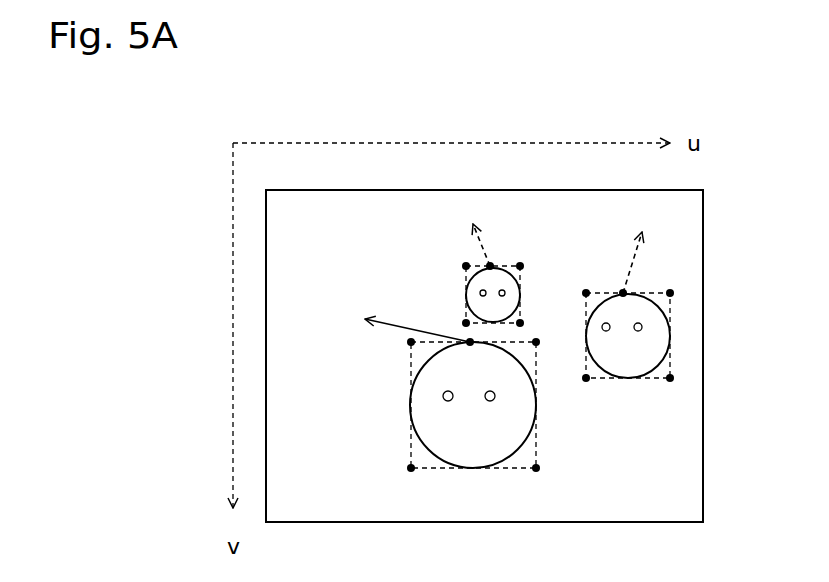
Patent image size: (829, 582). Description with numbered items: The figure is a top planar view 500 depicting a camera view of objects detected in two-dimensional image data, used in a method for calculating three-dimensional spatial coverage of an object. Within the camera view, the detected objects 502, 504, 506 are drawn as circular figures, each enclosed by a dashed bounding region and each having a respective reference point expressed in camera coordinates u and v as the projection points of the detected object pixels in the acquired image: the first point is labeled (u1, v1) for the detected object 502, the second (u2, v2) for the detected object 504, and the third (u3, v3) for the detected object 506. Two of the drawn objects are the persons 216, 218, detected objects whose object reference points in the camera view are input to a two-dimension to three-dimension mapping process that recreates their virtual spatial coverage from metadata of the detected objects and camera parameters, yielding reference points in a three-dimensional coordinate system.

The top planar view 500 is at (673, 573).
The person 216 is at (473, 405).
The person 218 is at (628, 336).
The detected object 502 is at (411, 372).
The detected object 504 is at (609, 380).
The detected object 506 is at (466, 283).